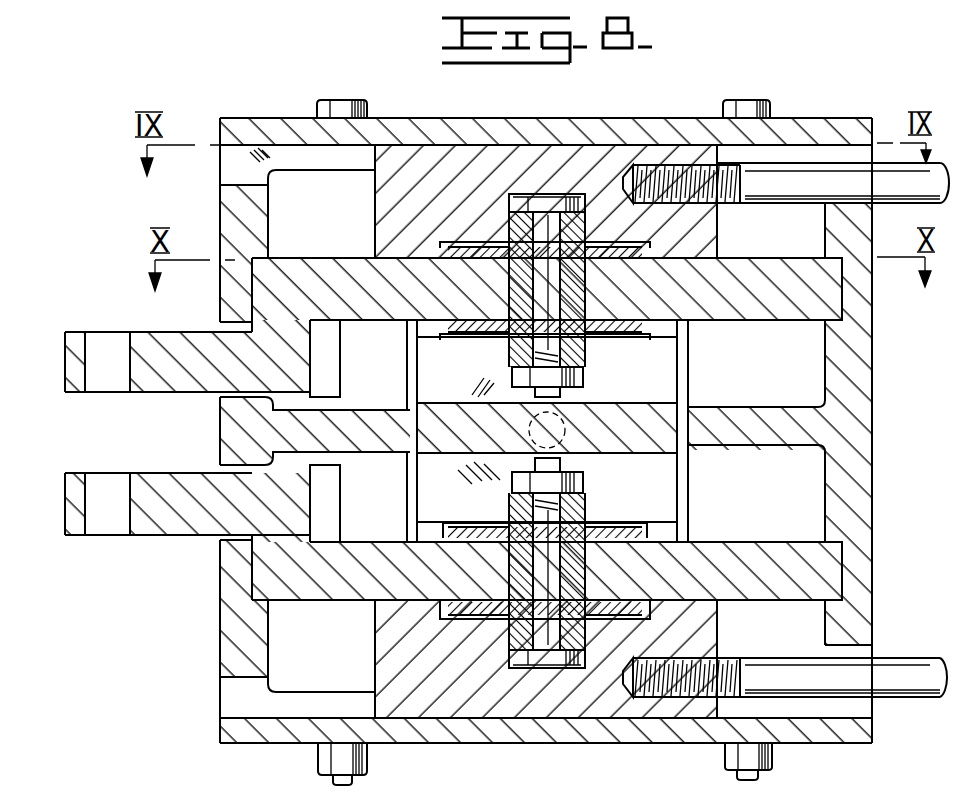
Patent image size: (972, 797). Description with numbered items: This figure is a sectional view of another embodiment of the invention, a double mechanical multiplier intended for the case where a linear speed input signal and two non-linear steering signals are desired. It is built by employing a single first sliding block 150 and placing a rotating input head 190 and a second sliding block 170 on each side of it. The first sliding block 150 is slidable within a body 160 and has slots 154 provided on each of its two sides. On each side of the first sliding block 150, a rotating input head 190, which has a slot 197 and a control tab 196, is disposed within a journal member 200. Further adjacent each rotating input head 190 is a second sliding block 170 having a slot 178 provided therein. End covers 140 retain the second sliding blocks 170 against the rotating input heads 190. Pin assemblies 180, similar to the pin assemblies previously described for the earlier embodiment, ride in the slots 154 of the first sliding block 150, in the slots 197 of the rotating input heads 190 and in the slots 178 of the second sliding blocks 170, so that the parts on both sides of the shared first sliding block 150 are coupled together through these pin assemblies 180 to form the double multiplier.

The end cover 140 is at (556, 127).
The first sliding block 150 is at (678, 455).
The slot 154 is at (642, 381).
The body 160 is at (872, 394).
The second sliding block 170 is at (424, 97).
The slot 178 is at (515, 226).
The pin assembly 180 is at (508, 344).
The rotating input head 190 is at (808, 314).
The control tab 196 is at (187, 382).
The slot 197 is at (516, 292).
The journal member 200 is at (872, 301).